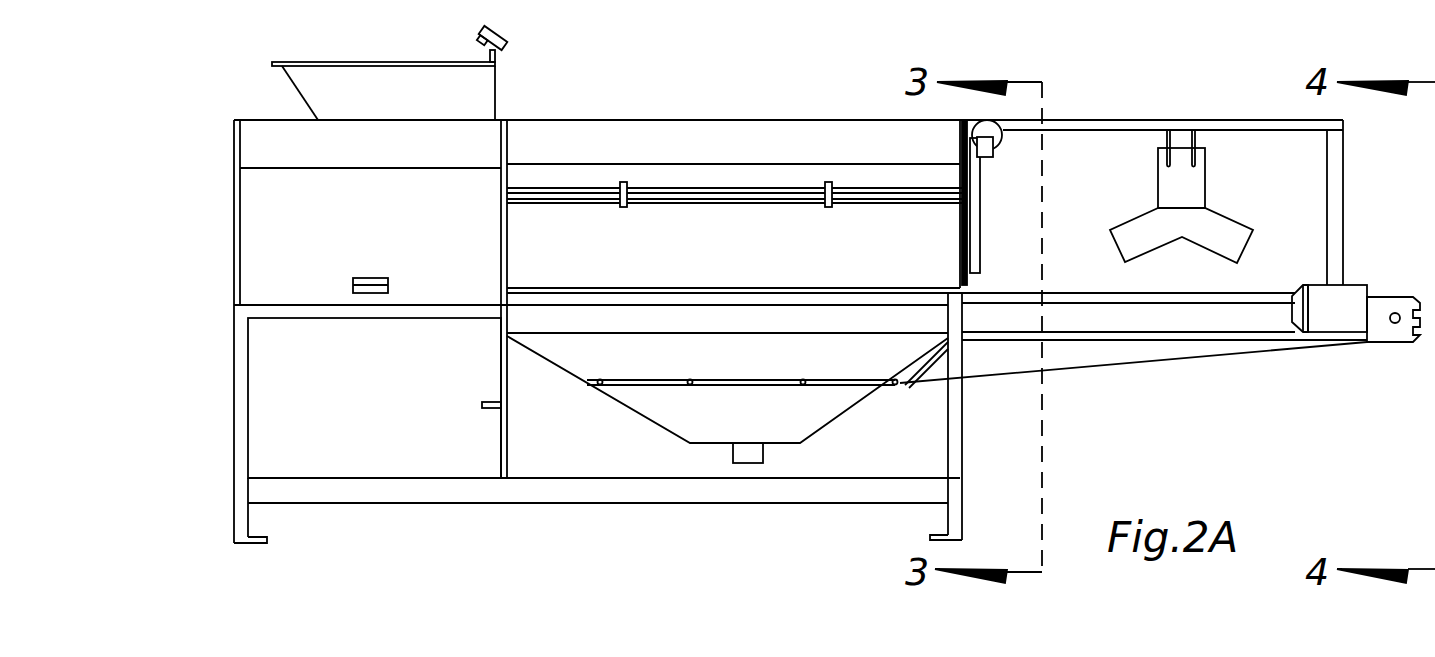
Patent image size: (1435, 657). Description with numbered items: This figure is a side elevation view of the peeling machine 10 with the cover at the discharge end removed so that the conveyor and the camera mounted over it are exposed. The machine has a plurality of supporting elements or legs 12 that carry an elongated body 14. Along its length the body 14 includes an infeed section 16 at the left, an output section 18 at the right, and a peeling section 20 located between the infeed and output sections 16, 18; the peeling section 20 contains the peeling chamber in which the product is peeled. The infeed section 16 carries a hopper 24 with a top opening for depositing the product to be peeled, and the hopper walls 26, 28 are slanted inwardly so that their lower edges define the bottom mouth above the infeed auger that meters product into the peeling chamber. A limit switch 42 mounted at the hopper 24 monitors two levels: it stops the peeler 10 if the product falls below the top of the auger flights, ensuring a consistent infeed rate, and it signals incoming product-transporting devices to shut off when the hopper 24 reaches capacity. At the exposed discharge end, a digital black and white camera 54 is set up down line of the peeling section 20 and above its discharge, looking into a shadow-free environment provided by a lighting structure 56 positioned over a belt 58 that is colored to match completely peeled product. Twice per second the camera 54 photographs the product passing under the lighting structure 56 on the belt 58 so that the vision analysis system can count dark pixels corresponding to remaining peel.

The peeling machine 10 is at (162, 140).
The legs 12 is at (232, 530).
The body 14 is at (218, 232).
The infeed section 16 is at (216, 102).
The output section 18 is at (1184, 100).
The peeling section 20 is at (724, 100).
The hopper 24 is at (306, 40).
The hopper wall 26 is at (398, 108).
The hopper wall 28 is at (292, 93).
The limit switch 42 is at (497, 33).
The camera 54 is at (1226, 170).
The lighting structure 56 is at (1205, 207).
The belt 58 is at (1095, 290).